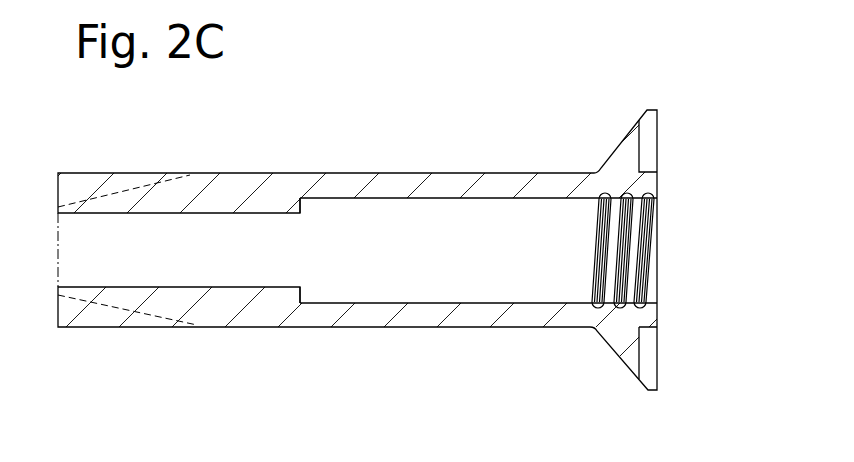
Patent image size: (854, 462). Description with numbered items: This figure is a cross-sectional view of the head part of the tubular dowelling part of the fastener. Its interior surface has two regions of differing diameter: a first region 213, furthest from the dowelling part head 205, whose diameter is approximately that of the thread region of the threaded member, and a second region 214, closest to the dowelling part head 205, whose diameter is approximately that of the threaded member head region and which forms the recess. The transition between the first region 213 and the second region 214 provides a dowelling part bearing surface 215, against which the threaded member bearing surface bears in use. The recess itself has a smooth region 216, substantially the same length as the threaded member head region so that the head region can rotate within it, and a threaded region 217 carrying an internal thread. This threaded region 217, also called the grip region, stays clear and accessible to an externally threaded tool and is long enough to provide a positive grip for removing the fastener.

The dowelling part head 205 is at (614, 352).
The first region 213 is at (58, 161).
The second region 214 is at (658, 96).
The dowelling part bearing surface 215 is at (300, 290).
The smooth region 216 is at (482, 262).
The threaded region 217 is at (648, 228).